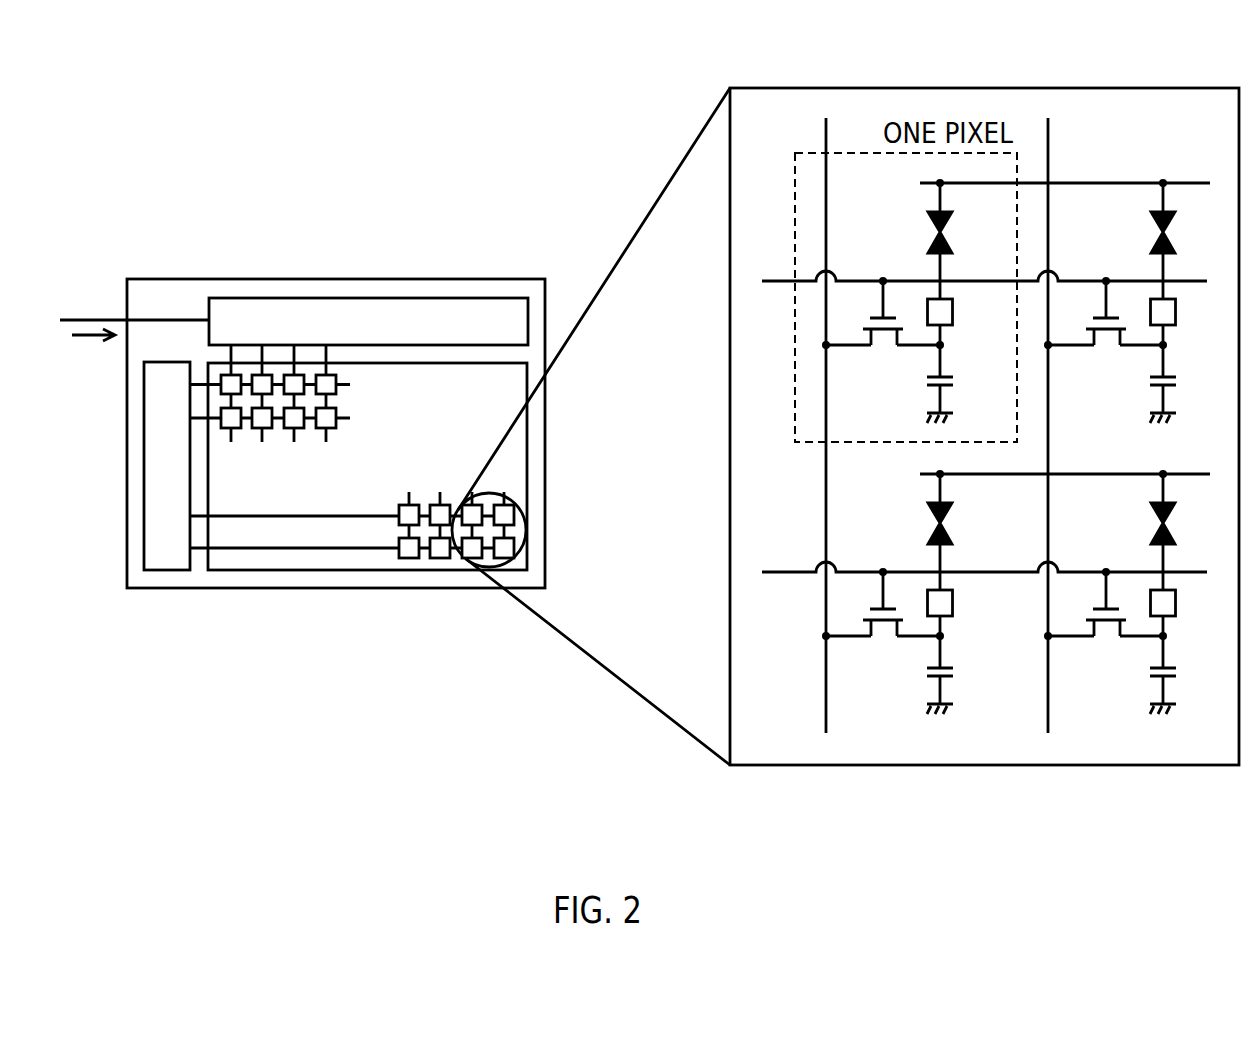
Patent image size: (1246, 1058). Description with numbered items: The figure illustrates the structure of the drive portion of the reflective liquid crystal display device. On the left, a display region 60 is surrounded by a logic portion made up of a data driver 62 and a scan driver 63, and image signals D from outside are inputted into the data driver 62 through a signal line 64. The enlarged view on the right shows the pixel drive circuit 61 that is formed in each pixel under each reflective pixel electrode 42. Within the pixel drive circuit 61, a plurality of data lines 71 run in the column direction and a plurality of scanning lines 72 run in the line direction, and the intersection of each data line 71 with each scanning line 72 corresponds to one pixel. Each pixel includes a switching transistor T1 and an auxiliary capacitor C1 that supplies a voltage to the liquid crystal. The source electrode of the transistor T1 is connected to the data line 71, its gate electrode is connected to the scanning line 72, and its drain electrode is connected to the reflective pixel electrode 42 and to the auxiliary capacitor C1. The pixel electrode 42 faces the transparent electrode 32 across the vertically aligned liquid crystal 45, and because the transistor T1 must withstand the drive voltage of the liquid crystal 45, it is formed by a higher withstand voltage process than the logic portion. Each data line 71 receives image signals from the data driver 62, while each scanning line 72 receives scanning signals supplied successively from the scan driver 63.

The display region 60 is at (313, 572).
The reflective pixel electrode 42 is at (408, 560).
The data driver 62 is at (478, 297).
The scan driver 63 is at (163, 572).
The signal line 64 is at (104, 318).
The image signals D is at (80, 338).
The pixel drive circuit 61 is at (1130, 88).
The data line 71 is at (826, 115).
The transparent electrode 32 is at (1097, 183).
The scanning line 72 is at (762, 282).
The vertically aligned liquid crystal 45 is at (928, 240).
The switching transistor T1 is at (883, 333).
The auxiliary capacitor C1 is at (953, 386).